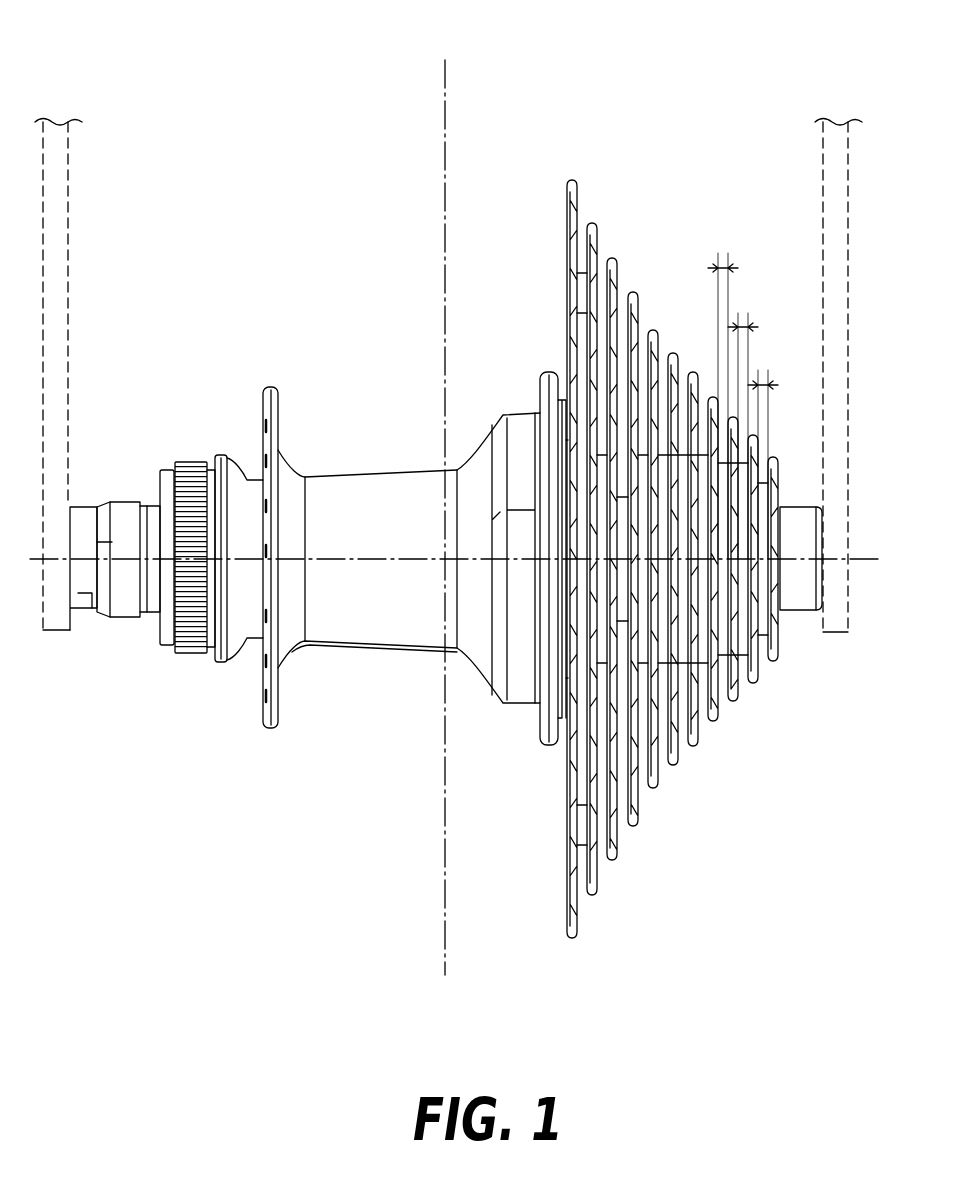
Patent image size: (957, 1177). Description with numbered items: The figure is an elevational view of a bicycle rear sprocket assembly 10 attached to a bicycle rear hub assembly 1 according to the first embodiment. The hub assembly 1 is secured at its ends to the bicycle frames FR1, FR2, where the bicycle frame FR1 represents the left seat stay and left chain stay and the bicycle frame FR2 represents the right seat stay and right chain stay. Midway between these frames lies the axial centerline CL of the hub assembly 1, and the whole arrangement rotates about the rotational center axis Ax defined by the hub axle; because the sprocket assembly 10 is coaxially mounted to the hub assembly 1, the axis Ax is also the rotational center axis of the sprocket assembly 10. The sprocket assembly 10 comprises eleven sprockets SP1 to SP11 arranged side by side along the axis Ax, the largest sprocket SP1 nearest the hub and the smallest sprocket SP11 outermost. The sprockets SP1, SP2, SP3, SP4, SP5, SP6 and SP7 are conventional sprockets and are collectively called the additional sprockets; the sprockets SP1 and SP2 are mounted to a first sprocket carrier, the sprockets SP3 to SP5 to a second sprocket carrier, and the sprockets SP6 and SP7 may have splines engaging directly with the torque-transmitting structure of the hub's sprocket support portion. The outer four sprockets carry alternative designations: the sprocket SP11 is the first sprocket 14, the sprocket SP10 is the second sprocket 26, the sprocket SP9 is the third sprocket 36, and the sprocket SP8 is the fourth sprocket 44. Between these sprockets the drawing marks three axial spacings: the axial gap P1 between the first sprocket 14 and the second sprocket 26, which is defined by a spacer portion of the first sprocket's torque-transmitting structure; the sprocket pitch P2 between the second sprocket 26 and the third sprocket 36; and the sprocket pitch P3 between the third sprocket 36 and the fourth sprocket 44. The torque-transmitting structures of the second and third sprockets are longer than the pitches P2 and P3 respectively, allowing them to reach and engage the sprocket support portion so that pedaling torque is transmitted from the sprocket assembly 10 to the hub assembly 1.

The bicycle rear hub assembly 1 is at (267, 745).
The bicycle rear sprocket assembly 10 is at (694, 593).
The sprocket SP1 is at (570, 942).
The sprocket SP2 is at (592, 897).
The sprocket SP3 is at (612, 860).
The sprocket SP4 is at (633, 826).
The sprocket SP5 is at (653, 790).
The sprocket SP6 is at (673, 768).
The sprocket SP7 is at (693, 748).
The fourth sprocket SP8 is at (745, 646).
The third sprocket SP9 is at (766, 627).
The second sprocket SP10 is at (790, 610).
The first sprocket SP11 is at (819, 592).
The first sprocket 14 is at (819, 592).
The second sprocket 26 is at (752, 684).
The third sprocket 36 is at (733, 703).
The fourth sprocket 44 is at (713, 723).
The axial gap P1 is at (762, 370).
The sprocket pitch P2 is at (741, 313).
The sprocket pitch P3 is at (722, 255).
The bicycle frame FR1 is at (68, 183).
The bicycle frame FR2 is at (823, 155).
The axial centerline CL is at (445, 70).
The rotational center axis Ax is at (858, 559).